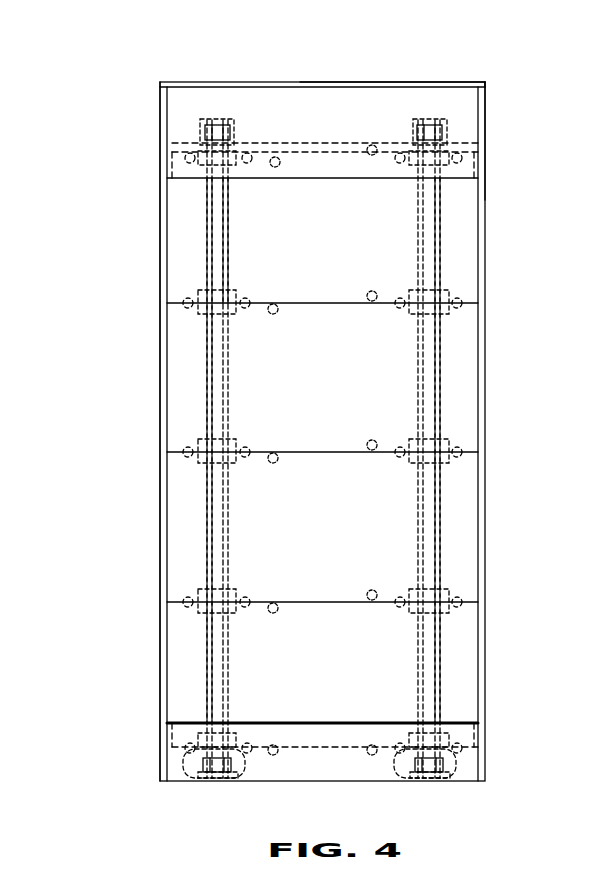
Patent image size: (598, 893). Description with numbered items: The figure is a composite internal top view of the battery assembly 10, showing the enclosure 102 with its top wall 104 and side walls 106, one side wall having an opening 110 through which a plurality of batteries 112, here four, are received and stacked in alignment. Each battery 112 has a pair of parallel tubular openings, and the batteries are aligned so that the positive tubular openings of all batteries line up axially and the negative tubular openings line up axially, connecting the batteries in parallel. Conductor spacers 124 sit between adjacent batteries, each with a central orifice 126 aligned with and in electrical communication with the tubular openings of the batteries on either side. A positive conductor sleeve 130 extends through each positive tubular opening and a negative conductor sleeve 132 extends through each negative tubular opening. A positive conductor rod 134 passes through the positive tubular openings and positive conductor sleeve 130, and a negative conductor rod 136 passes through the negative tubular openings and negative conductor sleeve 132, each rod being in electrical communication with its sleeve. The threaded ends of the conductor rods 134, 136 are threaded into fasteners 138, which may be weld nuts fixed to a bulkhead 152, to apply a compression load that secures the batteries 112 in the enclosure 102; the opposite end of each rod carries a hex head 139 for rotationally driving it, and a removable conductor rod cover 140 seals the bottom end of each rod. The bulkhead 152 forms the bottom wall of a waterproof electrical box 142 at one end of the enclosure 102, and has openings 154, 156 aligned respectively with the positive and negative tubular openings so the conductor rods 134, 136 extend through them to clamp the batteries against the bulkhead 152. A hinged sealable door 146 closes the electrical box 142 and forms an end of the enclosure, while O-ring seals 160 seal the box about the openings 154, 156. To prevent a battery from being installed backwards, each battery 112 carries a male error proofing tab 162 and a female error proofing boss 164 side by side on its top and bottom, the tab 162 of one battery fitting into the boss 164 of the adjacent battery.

The storage rack assembly 10 is at (500, 62).
The enclosure 102 is at (163, 692).
The top wall 104 is at (277, 82).
The side walls 106 is at (488, 141).
The opening 110 is at (180, 246).
The batteries 112 is at (458, 208).
The conductor spacers 124 is at (231, 165).
The central orifice 126 is at (228, 300).
The positive conductor sleeve 130 is at (207, 226).
The negative conductor sleeve 132 is at (440, 250).
The positive conductor rod 134 is at (218, 778).
The negative conductor rod 136 is at (432, 778).
The fasteners 138 is at (205, 130).
The hex head 139 is at (183, 768).
The conductor rod cover 140 is at (245, 778).
The waterproof electrical box 142 is at (468, 98).
The sealable door 146 is at (385, 87).
The bulkhead 152 is at (178, 143).
The opening 154 is at (198, 152).
The opening 156 is at (445, 148).
The O-ring seals 160 is at (403, 152).
The male error proofing tab 162 is at (372, 155).
The female error proofing boss 164 is at (275, 167).